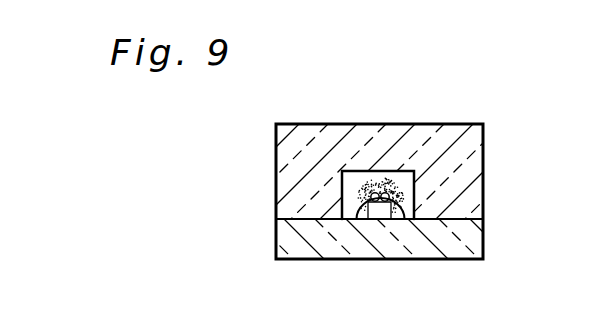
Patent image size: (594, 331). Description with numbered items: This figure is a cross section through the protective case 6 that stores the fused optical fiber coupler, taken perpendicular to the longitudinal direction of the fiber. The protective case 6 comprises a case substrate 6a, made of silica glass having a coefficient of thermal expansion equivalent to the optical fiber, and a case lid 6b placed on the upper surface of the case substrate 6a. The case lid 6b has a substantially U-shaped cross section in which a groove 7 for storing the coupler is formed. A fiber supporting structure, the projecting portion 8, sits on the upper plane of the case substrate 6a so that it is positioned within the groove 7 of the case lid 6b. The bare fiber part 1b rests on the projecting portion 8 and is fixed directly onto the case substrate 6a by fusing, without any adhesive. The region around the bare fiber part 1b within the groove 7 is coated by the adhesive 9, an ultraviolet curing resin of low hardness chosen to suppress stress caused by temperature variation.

The bare fiber part 1b is at (357, 200).
The protective case 6 is at (497, 157).
The case substrate 6a is at (484, 242).
The case lid 6b is at (487, 203).
The groove 7 is at (401, 172).
The projecting portion 8 is at (376, 209).
The adhesive 9 is at (372, 178).